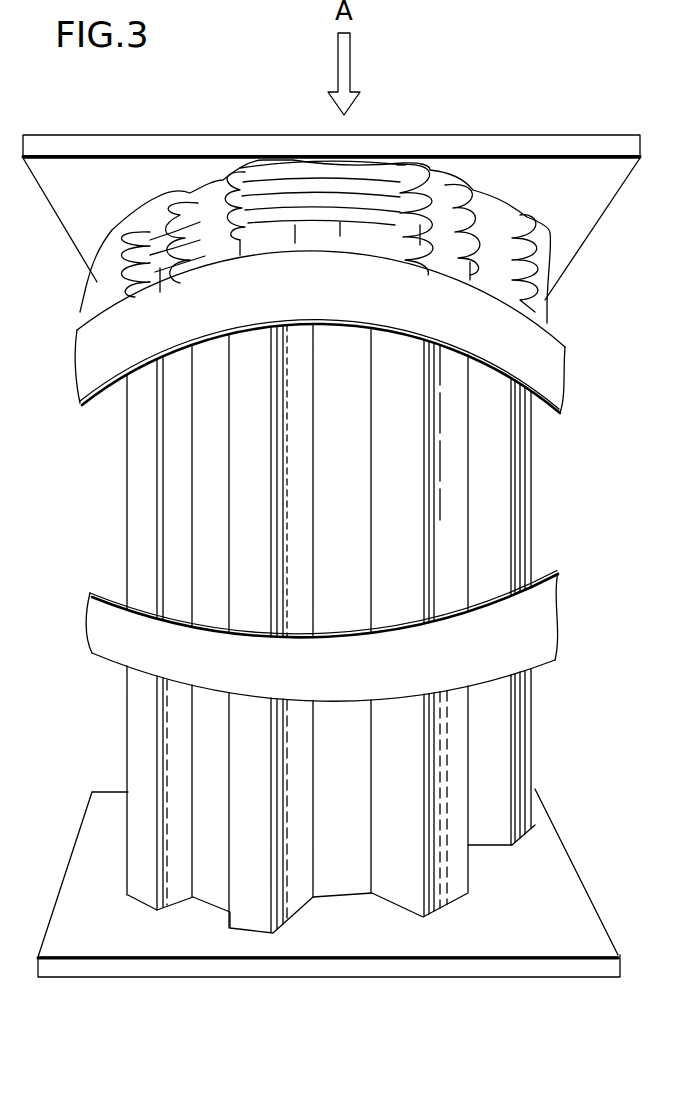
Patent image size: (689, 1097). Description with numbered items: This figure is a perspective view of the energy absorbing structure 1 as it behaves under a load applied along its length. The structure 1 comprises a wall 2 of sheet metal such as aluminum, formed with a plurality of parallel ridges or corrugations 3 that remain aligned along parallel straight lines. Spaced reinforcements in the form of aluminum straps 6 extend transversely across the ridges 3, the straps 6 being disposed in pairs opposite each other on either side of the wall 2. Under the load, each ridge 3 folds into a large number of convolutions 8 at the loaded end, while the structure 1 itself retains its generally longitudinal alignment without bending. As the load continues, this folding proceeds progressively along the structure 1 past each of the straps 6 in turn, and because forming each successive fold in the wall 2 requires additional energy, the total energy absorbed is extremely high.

The energy absorbing structure 1 is at (147, 482).
The wall 2 is at (481, 487).
The ridges or corrugations 3 is at (520, 810).
The straps 6 is at (543, 350).
The convolutions 8 is at (80, 312).